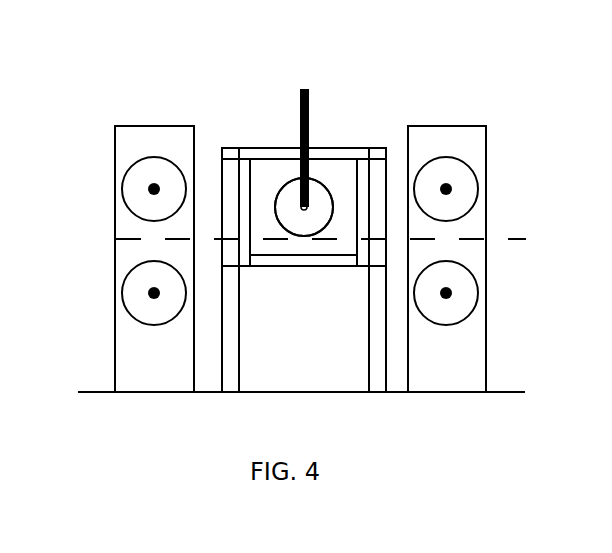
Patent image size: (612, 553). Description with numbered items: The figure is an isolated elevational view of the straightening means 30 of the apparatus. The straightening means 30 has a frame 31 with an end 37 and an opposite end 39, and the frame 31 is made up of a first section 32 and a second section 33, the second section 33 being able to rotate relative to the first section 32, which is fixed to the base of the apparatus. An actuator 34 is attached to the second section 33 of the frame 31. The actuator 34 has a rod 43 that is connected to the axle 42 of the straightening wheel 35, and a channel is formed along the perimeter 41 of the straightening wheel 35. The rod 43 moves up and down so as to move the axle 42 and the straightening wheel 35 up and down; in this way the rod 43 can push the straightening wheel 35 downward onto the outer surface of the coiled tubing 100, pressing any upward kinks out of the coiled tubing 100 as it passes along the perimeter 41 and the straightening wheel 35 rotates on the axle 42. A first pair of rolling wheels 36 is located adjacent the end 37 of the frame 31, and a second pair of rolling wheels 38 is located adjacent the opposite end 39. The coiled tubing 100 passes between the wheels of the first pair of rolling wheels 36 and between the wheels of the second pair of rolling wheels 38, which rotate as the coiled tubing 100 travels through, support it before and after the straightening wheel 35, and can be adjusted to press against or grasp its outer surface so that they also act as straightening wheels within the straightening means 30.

The straightening means 30 is at (237, 51).
The frame 31 is at (230, 147).
The first section 32 is at (378, 165).
The second section 33 is at (335, 158).
The actuator 34 is at (300, 92).
The straightening wheel 35 is at (320, 193).
The first pair of rolling wheels 36 is at (128, 170).
The end 37 is at (230, 357).
The second pair of rolling wheels 38 is at (470, 168).
The opposite end 39 is at (375, 365).
The perimeter 41 is at (288, 182).
The axle 42 is at (304, 212).
The rod 43 is at (300, 117).
The coiled tubing 100 is at (90, 239).